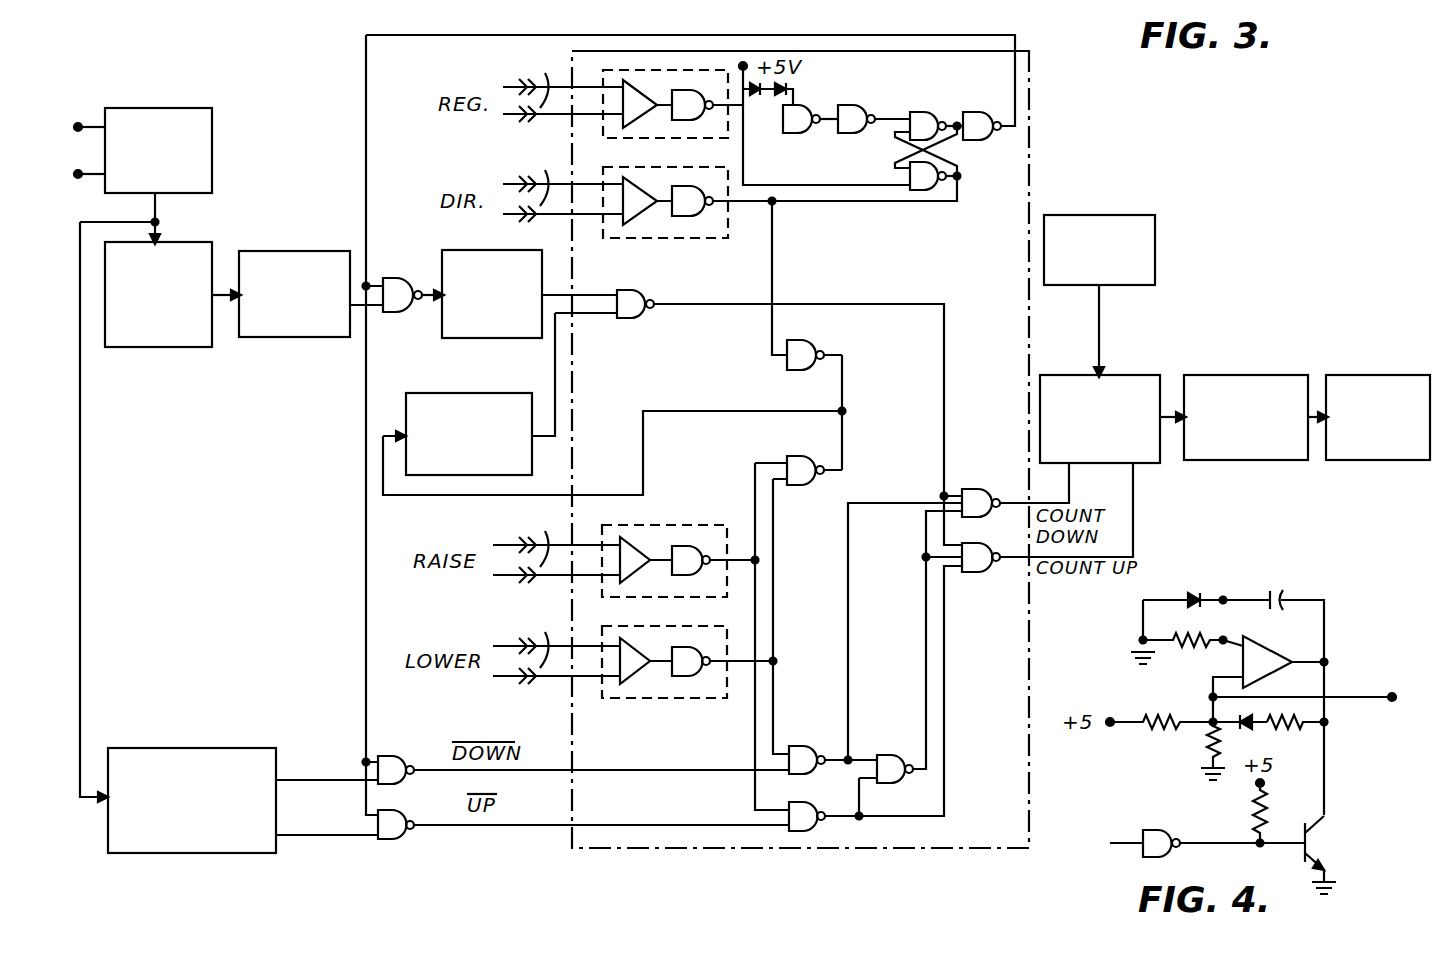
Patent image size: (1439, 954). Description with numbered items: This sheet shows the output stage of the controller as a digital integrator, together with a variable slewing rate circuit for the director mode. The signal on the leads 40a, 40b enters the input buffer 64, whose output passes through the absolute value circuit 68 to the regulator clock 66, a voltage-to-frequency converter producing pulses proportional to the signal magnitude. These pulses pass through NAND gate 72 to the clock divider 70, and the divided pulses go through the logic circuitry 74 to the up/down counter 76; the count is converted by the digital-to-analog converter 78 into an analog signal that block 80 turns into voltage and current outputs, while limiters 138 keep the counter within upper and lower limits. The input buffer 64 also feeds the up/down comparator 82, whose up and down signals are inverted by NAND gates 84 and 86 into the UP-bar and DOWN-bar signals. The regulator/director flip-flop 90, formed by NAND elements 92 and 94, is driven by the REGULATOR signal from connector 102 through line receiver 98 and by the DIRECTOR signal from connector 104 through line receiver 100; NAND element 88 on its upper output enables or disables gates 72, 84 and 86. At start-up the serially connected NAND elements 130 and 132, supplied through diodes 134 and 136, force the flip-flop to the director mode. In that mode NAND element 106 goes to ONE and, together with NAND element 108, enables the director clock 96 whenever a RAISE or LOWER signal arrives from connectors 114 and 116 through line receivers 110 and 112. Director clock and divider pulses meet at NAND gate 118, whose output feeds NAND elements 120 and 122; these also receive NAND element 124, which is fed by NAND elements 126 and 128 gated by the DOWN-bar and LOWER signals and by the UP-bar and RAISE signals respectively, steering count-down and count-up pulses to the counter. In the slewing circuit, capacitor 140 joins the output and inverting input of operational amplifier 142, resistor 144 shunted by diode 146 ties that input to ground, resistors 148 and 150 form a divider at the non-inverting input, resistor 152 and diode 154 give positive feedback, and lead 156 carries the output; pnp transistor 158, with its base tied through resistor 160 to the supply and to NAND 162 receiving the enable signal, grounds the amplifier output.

In FIG. 3, the lead 40a is at (76, 113).
In FIG. 3, the lead 40b is at (76, 160).
In FIG. 3, the input buffer 64 is at (176, 108).
In FIG. 3, the regulator clock 66 is at (296, 337).
In FIG. 3, the absolute value circuit 68 is at (164, 347).
In FIG. 3, the clock divider 70 is at (515, 338).
In FIG. 3, the NAND gate 72 is at (394, 279).
In FIG. 3, the logic circuitry 74 is at (1035, 152).
In FIG. 3, the up/down counter 76 is at (1127, 375).
In FIG. 3, the digital-to-analog converter 78 is at (1257, 375).
In FIG. 3, the output circuits 80 is at (1370, 375).
In FIG. 3, the up/down comparator 82 is at (218, 748).
In FIG. 3, the NAND gate 84 is at (392, 757).
In FIG. 3, the NAND gate 86 is at (394, 840).
In FIG. 3, the NAND element 88 is at (974, 112).
In FIG. 3, the regulator/director flip-flop 90 is at (949, 150).
In FIG. 3, the NAND element 92 is at (915, 112).
In FIG. 3, the NAND element 94 is at (923, 190).
In FIG. 3, the director clock 96 is at (450, 393).
In FIG. 3, the line receiver 98 is at (672, 138).
In FIG. 3, the line receiver 100 is at (660, 238).
In FIG. 3, the connector 102 is at (545, 73).
In FIG. 3, the connector 104 is at (545, 171).
In FIG. 3, the NAND element 106 is at (808, 345).
In FIG. 3, the NAND element 108 is at (806, 456).
In FIG. 3, the line receiver 110 is at (680, 525).
In FIG. 3, the line receiver 112 is at (690, 698).
In FIG. 3, the connector 114 is at (545, 532).
In FIG. 3, the connector 116 is at (545, 633).
In FIG. 3, the NAND gate 118 is at (632, 318).
In FIG. 3, the NAND element 120 is at (970, 489).
In FIG. 3, the NAND element 122 is at (972, 572).
In FIG. 3, the NAND element 124 is at (890, 755).
In FIG. 3, the NAND element 126 is at (800, 746).
In FIG. 3, the NAND element 128 is at (800, 808).
In FIG. 3, the NAND element 130 is at (858, 105).
In FIG. 3, the NAND element 132 is at (800, 133).
In FIG. 3, the diode 134 is at (756, 96).
In FIG. 3, the diode 136 is at (790, 90).
In FIG. 3, the limiters 138 is at (1115, 215).
In FIG. 4, the capacitor 140 is at (1276, 593).
In FIG. 4, the operational amplifier 142 is at (1271, 652).
In FIG. 4, the resistor 144 is at (1193, 657).
In FIG. 4, the diode 146 is at (1194, 593).
In FIG. 4, the resistor 148 is at (1163, 716).
In FIG. 4, the resistor 150 is at (1205, 752).
In FIG. 4, the resistor 152 is at (1293, 729).
In FIG. 4, the diode 154 is at (1240, 737).
In FIG. 4, the lead 156 is at (1370, 696).
In FIG. 4, the pnp transistor 158 is at (1332, 836).
In FIG. 4, the resistor 160 is at (1255, 822).
In FIG. 4, the NAND 162 is at (1150, 830).